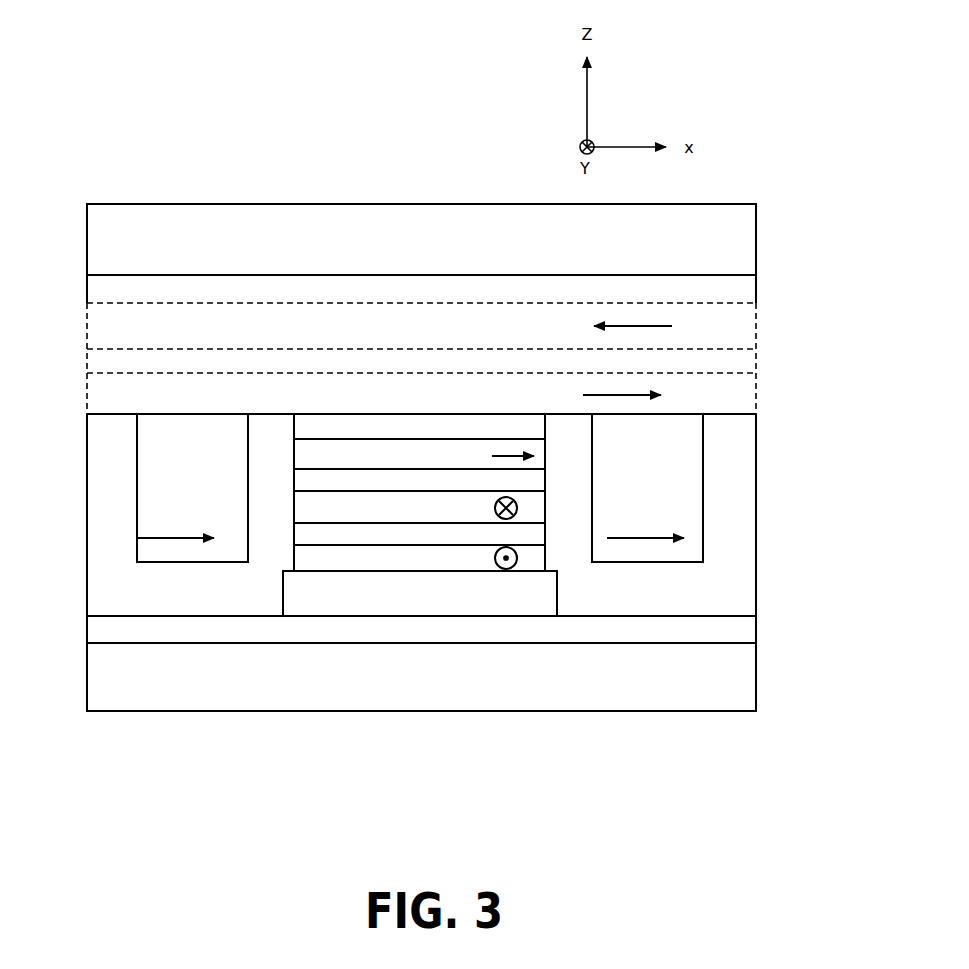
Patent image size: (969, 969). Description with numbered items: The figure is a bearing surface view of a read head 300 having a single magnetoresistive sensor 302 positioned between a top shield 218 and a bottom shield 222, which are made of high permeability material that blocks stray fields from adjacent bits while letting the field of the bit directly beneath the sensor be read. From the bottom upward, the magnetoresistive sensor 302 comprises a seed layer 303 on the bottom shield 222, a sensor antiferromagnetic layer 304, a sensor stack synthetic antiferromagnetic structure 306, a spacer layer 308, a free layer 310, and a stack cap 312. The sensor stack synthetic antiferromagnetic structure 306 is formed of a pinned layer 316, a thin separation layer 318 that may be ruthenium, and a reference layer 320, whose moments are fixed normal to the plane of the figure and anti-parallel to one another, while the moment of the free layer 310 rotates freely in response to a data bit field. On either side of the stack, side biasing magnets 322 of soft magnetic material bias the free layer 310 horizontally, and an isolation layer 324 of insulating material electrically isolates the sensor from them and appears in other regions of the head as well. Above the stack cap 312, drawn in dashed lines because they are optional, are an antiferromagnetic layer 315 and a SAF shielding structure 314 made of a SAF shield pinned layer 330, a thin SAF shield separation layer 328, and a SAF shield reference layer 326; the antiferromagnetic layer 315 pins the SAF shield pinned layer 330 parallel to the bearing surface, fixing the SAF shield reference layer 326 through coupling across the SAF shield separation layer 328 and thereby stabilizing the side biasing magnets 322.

The read head 300 is at (278, 136).
The magnetoresistive sensor 302 is at (819, 434).
The top shield 218 is at (421, 239).
The SAF shielding structure 314 is at (78, 305).
The AFM layer 315 is at (421, 289).
The SAF shield pinned layer 330 is at (421, 332).
The SAF shield separation layer 328 is at (421, 359).
The SAF shield reference layer 326 is at (421, 396).
The side biasing magnets 322 is at (420, 488).
The isolation layer 324 is at (253, 467).
The sensor stack synthetic antiferromagnetic structure 306 is at (555, 495).
The stack cap 312 is at (419, 426).
The free layer 310 is at (419, 454).
The spacer layer 308 is at (419, 480).
The reference layer 320 is at (419, 507).
The separation layer 318 is at (419, 534).
The pinned layer 316 is at (419, 558).
The sensor antiferromagnetic layer 304 is at (420, 593).
The seed layer 303 is at (421, 629).
The bottom shield 222 is at (421, 677).